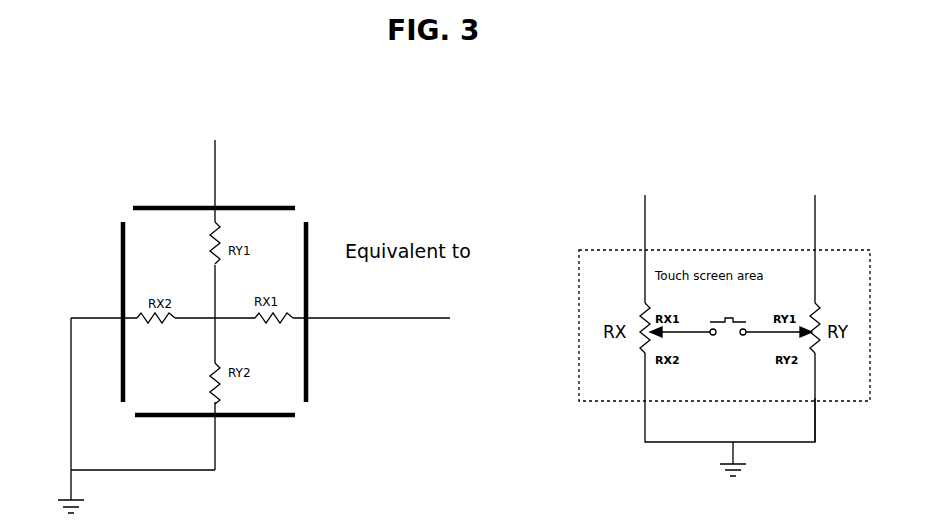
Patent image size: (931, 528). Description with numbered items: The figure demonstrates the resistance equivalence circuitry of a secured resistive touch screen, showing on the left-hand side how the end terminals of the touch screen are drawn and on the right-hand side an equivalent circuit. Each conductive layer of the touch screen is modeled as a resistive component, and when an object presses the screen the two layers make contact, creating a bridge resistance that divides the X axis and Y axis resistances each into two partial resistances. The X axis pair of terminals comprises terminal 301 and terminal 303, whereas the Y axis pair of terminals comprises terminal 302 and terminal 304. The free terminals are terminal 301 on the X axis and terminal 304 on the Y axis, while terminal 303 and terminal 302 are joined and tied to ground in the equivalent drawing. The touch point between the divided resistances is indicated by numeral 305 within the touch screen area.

The terminal 301 is at (640, 197).
The terminal 302 is at (217, 450).
The terminal 303 is at (86, 314).
The terminal 304 is at (217, 168).
The touch point / switch 305 is at (217, 360).